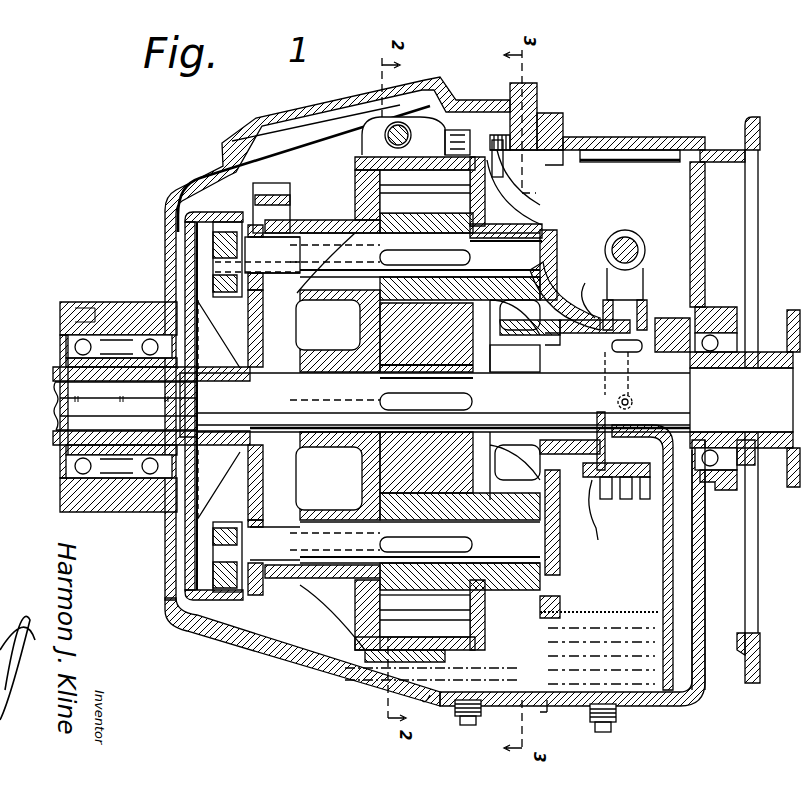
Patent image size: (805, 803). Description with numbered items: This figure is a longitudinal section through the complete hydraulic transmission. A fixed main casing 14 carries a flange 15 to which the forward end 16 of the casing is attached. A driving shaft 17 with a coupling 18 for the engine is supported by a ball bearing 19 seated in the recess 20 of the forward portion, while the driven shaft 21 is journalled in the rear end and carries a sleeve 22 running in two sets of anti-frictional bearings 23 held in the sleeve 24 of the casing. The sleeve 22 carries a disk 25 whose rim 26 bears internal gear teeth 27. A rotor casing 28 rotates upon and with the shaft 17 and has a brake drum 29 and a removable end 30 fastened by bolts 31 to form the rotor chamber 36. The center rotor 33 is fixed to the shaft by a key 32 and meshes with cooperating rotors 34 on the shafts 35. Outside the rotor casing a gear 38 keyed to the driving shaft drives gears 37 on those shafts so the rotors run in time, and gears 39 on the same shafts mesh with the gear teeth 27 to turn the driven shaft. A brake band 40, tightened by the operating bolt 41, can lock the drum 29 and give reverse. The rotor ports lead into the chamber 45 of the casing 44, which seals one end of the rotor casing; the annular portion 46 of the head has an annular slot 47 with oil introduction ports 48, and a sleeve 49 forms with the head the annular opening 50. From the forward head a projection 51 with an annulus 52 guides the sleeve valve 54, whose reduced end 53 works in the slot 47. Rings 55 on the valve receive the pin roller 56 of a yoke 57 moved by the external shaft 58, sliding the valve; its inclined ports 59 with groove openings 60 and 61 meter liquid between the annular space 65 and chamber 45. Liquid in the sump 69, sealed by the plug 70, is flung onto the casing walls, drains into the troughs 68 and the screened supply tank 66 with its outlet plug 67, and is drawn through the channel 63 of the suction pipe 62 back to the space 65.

The main casing 14 is at (210, 154).
The flange 15 is at (506, 88).
The forward end of the casing 16 is at (555, 122).
The driving shaft 17 is at (766, 412).
The coupling 18 is at (792, 308).
The ball bearing 19 is at (740, 325).
The recess 20 is at (712, 330).
The driven shaft 21 is at (56, 382).
The sleeve 22 is at (56, 432).
The anti-frictional bearings 23 is at (168, 478).
The sleeve of the casing 24 is at (120, 320).
The disk 25 is at (175, 270).
The rim 26 is at (186, 213).
The internal gear teeth 27 is at (200, 226).
The rotor casing 28 is at (351, 196).
The brake drum 29 is at (352, 160).
The removable end 30 is at (490, 184).
The bolts 31 is at (540, 138).
The key 32 is at (440, 372).
The main or center rotor 33 is at (392, 328).
The cooperating rotor 34 is at (380, 505).
The shaft 35 is at (395, 542).
The rotor chamber 36 is at (436, 136).
The gear 37 is at (318, 606).
The gear 38 is at (245, 342).
The gear 39 is at (216, 594).
The brake band 40 is at (368, 655).
The bolt or operating member 41 is at (401, 128).
The casing 44 is at (560, 270).
The chamber 45 is at (562, 290).
The annular portion 46 is at (518, 365).
The annular slot 47 is at (525, 470).
The oil introduction ports 48 is at (522, 325).
The sleeve 49 is at (522, 425).
The annular opening 50 is at (608, 398).
The projection 51 is at (662, 330).
The annulus 52 is at (628, 350).
The inner reduced end 53 is at (540, 330).
The sleeve valve 54 is at (606, 302).
The recess forming rings 55 is at (640, 303).
The pin roller 56 is at (633, 402).
The yoke 57 is at (632, 290).
The shaft 58 is at (632, 248).
The inclined ports 59 is at (592, 505).
The circumferential groove opening 60 is at (600, 468).
The circumferential groove opening 61 is at (593, 292).
The suction pipe 62 is at (665, 568).
The channel 63 is at (698, 570).
The annular space 65 is at (606, 414).
The screened supply tank 66 is at (565, 706).
The outlet plug 67 is at (620, 732).
The scuppers or troughs 68 is at (548, 612).
The sump 69 is at (428, 712).
The plug 70 is at (468, 724).